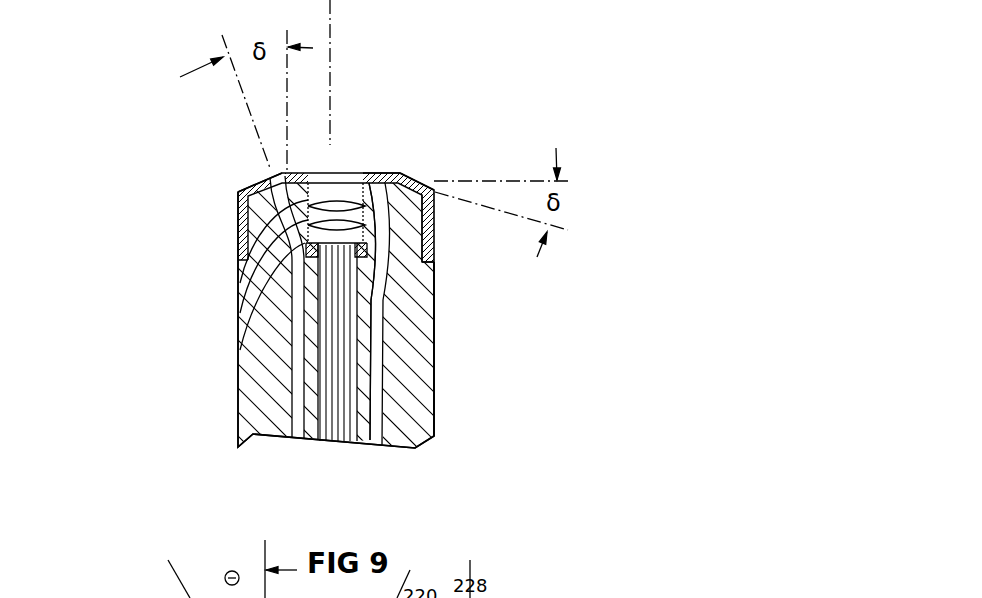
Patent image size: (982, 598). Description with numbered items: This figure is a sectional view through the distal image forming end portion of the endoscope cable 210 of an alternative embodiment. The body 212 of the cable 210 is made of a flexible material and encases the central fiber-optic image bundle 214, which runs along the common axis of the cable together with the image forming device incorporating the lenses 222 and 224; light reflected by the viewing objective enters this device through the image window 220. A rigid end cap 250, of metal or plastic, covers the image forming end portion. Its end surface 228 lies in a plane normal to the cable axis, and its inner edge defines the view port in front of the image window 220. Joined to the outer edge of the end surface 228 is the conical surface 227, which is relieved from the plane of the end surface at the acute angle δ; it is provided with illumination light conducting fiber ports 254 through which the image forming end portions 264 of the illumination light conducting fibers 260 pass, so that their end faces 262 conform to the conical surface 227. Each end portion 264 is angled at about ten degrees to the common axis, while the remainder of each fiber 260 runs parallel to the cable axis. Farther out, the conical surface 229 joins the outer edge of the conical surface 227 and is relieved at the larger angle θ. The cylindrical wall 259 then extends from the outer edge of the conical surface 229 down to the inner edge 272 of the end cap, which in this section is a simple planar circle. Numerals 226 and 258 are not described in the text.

The endoscope cable 210 is at (588, 345).
The body 212 is at (240, 397).
The central fiber-optic image bundle 214 is at (343, 423).
The image window 220 is at (343, 173).
The lens 222 is at (240, 283).
The lens 224 is at (240, 313).
The third layer 226 is at (240, 350).
The conical surface 227 is at (262, 172).
The end surface 228 is at (395, 172).
The conical surface 229 is at (248, 184).
The end cap 250 is at (240, 241).
The illumination light conducting fiber port 254 is at (405, 170).
The cavity 258 is at (320, 172).
The cylindrical wall 259 is at (435, 252).
The illumination light conducting fiber 260 is at (378, 385).
The end face 262 is at (412, 174).
The image forming end portion 264 is at (383, 287).
The inner edge 272 is at (435, 273).